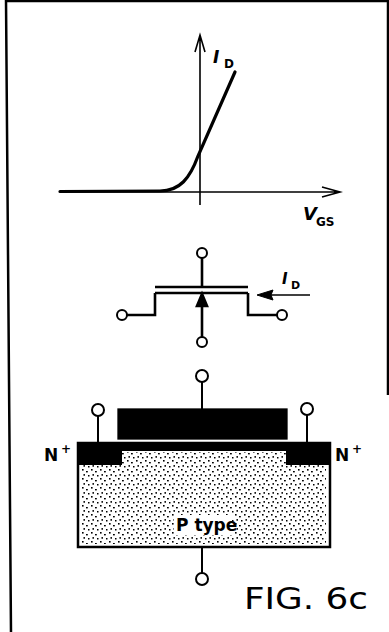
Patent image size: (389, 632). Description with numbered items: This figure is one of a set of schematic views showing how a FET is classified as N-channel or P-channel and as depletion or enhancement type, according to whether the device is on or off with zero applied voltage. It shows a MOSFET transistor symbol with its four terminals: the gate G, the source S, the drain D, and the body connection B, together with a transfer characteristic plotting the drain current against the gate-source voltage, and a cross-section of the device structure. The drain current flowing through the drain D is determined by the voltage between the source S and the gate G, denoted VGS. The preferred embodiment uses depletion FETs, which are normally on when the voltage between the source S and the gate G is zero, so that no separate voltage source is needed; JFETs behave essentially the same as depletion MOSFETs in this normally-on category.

The gate G is at (201, 266).
The source S is at (134, 320).
The drain D is at (267, 320).
The body (bulk) terminal B is at (191, 321).